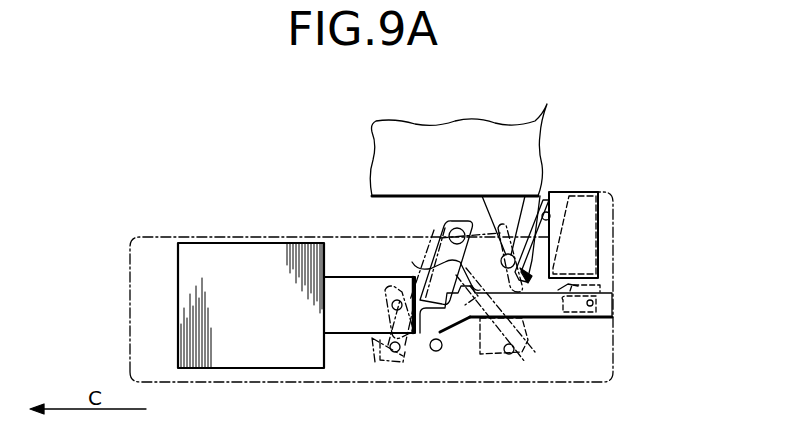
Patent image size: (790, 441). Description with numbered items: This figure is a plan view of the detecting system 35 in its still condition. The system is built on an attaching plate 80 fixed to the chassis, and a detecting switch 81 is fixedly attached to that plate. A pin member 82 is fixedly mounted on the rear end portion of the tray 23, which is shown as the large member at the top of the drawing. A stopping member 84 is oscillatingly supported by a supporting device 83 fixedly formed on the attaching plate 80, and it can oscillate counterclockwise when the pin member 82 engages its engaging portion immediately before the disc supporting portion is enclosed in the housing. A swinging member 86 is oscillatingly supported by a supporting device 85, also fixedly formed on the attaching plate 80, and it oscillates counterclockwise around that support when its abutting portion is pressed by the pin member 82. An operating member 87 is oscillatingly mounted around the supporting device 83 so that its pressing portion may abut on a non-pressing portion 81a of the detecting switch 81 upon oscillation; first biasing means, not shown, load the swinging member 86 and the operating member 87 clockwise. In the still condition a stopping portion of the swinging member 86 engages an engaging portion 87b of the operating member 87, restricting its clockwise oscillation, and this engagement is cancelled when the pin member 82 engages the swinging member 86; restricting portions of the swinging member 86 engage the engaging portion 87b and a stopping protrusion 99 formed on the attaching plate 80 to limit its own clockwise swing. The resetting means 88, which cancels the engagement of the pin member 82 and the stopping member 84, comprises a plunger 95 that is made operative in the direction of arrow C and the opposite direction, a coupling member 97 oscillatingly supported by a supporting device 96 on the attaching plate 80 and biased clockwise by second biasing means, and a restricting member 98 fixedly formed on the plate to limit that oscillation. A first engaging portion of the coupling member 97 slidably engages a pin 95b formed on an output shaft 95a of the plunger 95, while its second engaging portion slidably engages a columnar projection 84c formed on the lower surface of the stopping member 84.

The tray 23 is at (548, 126).
The detecting system 35 is at (290, 183).
The attaching plate 80 is at (138, 320).
The detecting switch 81 is at (590, 228).
The non-pressing portion 81a is at (544, 200).
The pin member 82 is at (534, 262).
The supporting device 83 is at (522, 356).
The stopping member 84 is at (484, 198).
The columnar projection 84c is at (456, 222).
The supporting device 85 is at (592, 300).
The swinging member 86 is at (604, 310).
The operating member 87 is at (486, 352).
The engaging portion 87b is at (412, 262).
The resetting means 88 is at (356, 327).
The plunger 95 is at (200, 258).
The output shaft 95a is at (338, 312).
The pin 95b is at (383, 300).
The supporting device 96 is at (383, 348).
The coupling member 97 is at (410, 358).
The restricting member 98 is at (440, 352).
The stopping protrusion 99 is at (582, 284).